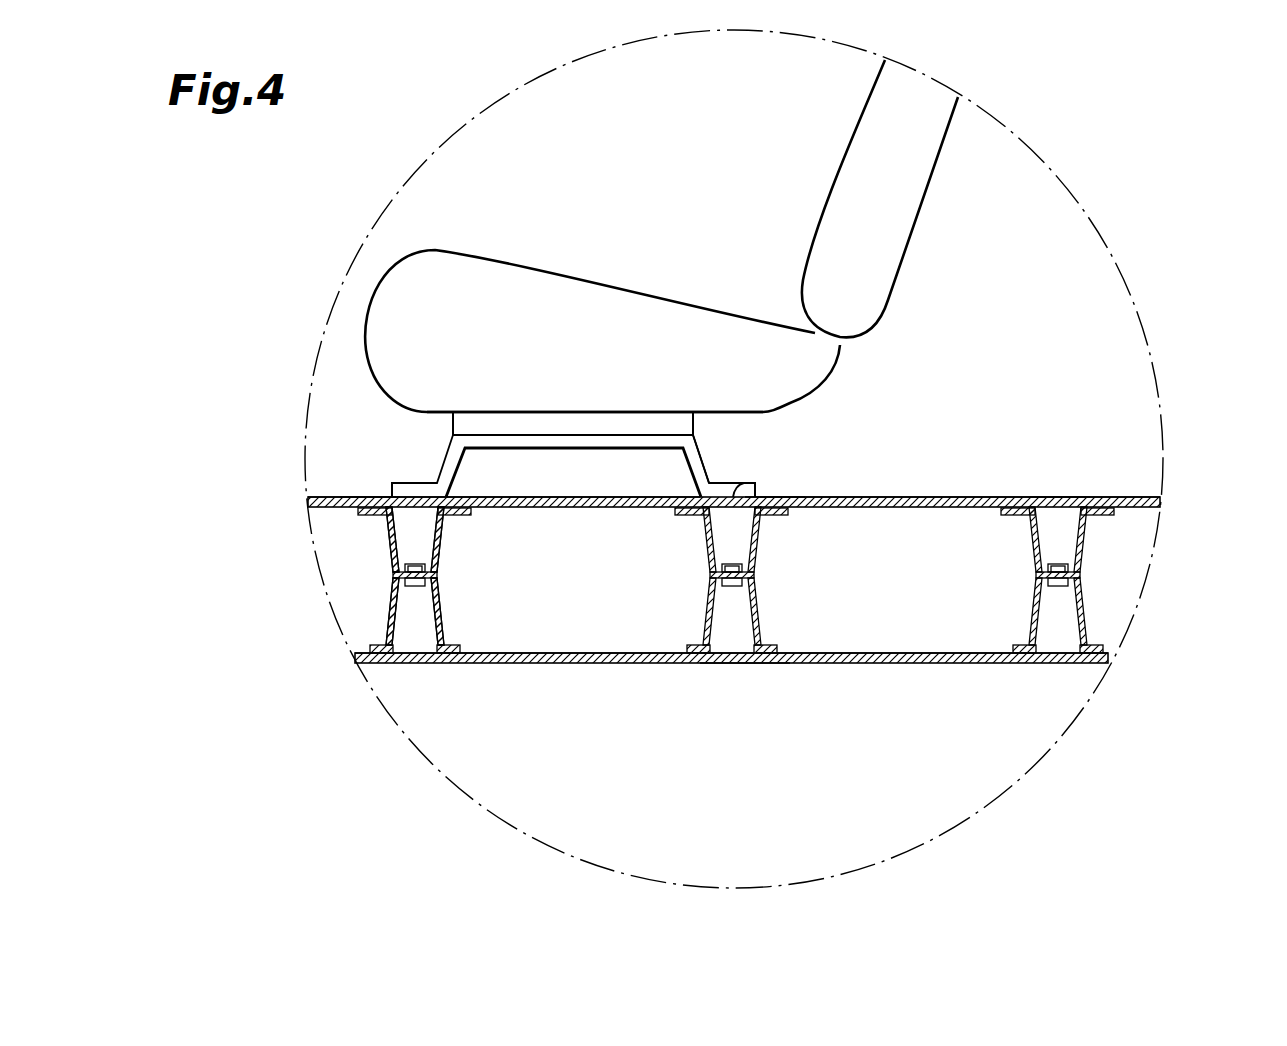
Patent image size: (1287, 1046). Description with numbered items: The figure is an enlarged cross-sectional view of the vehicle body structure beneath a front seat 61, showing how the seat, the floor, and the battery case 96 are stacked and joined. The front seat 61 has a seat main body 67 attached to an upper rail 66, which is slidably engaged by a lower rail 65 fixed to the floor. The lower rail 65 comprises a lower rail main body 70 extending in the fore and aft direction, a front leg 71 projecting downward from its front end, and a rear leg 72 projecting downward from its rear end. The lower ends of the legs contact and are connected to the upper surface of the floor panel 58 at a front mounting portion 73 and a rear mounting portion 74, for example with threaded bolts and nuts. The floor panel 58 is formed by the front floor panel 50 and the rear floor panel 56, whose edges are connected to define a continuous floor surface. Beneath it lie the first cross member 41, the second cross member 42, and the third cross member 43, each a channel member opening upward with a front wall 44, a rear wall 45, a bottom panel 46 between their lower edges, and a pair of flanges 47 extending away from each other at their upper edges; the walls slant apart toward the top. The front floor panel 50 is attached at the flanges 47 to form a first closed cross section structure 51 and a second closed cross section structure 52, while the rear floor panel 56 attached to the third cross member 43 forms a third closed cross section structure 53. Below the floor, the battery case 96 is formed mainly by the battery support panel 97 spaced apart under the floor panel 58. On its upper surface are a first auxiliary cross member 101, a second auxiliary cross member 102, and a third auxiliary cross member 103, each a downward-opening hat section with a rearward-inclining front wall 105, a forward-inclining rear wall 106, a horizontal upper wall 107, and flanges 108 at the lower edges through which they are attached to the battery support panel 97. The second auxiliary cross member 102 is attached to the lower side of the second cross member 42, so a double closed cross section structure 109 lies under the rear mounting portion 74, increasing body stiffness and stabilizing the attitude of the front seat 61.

The front seat 61 is at (815, 152).
The seat main body 67 is at (510, 272).
The lower rail main body 70 is at (493, 440).
The upper rail 66 is at (578, 425).
The lower rail 65 is at (630, 440).
The front leg 71 is at (453, 443).
The rear leg 72 is at (695, 448).
The front mounting portion 73 is at (410, 490).
The rear mounting portion 74 is at (738, 495).
The floor panel 58 is at (734, 502).
The front floor panel 50 is at (322, 497).
The rear floor panel 56 is at (1160, 497).
The first closed cross section structure 51 is at (368, 486).
The second closed cross section structure 52 is at (777, 488).
The third closed cross section structure 53 is at (1065, 486).
The flange 47 is at (365, 514).
The first cross member 41 is at (388, 552).
The front wall 44 is at (385, 535).
The rear wall 45 is at (437, 542).
The bottom panel 46 is at (433, 557).
The upper wall 107 is at (432, 590).
The first auxiliary cross member 101 is at (388, 607).
The front wall 105 is at (388, 628).
The rear wall 106 is at (440, 627).
The flange 108 is at (385, 665).
The second cross member 42 is at (705, 548).
The second auxiliary cross member 102 is at (706, 606).
The third cross member 43 is at (1033, 540).
The third auxiliary cross member 103 is at (1034, 605).
The battery case 96 is at (617, 665).
The battery support panel 97 is at (505, 665).
The double closed cross section structure 109 is at (745, 678).